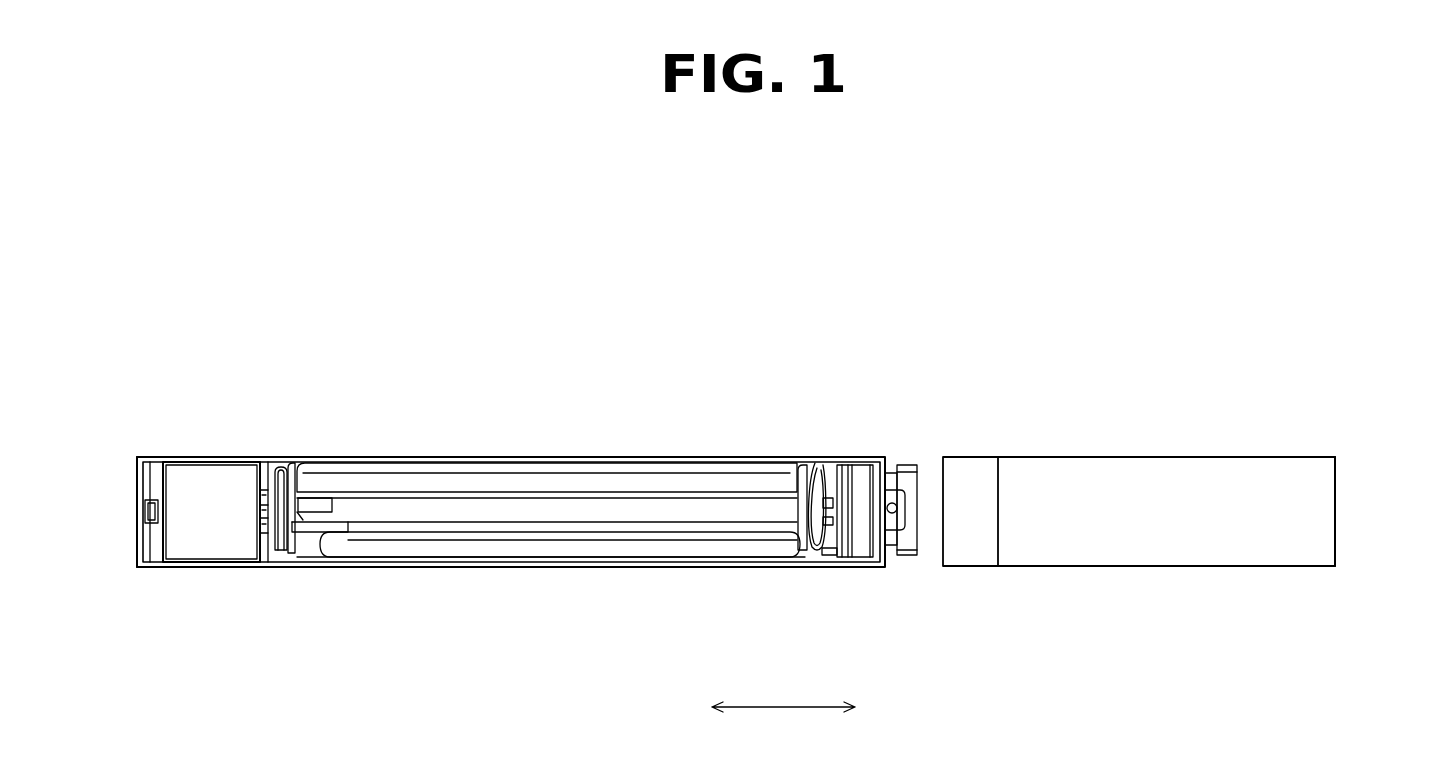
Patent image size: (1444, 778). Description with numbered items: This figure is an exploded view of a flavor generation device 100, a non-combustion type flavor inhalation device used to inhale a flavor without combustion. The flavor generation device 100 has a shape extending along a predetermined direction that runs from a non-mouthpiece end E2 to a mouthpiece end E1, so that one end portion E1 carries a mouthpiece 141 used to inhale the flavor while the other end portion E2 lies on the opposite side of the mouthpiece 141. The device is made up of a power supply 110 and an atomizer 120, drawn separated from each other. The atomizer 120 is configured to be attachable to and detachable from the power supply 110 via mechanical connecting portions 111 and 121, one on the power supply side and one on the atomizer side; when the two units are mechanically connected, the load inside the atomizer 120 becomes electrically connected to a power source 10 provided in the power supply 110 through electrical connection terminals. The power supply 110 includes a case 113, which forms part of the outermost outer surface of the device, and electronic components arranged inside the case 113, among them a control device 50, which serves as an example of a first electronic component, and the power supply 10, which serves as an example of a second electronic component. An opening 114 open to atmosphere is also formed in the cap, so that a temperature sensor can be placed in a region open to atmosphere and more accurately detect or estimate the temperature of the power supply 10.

The flavor generation device 100 is at (941, 344).
The power supply 110 is at (623, 432).
The case 113 is at (428, 568).
The opening 114 is at (150, 523).
The control device 50 is at (218, 517).
The power supply 10 is at (638, 547).
The mechanical connecting portion 111 is at (908, 558).
The atomizer 120 is at (1186, 433).
The mechanical connecting portion 121 is at (968, 548).
The mouthpiece 141 is at (1358, 481).
The mouthpiece end E1 is at (1335, 525).
The non-mouthpiece end E2 is at (137, 480).